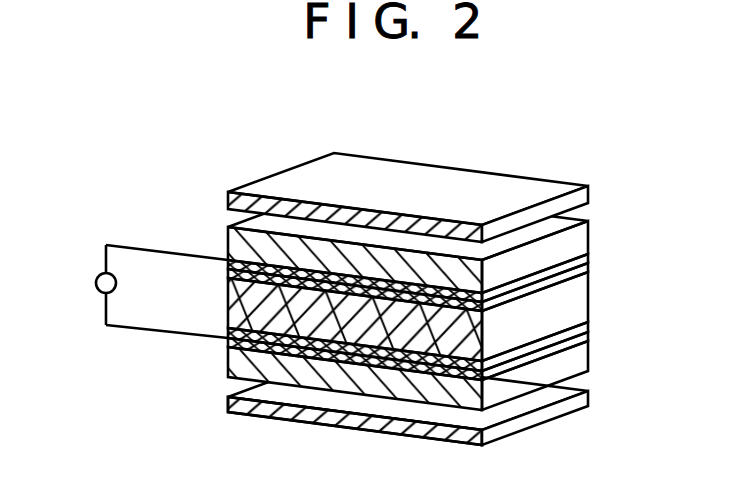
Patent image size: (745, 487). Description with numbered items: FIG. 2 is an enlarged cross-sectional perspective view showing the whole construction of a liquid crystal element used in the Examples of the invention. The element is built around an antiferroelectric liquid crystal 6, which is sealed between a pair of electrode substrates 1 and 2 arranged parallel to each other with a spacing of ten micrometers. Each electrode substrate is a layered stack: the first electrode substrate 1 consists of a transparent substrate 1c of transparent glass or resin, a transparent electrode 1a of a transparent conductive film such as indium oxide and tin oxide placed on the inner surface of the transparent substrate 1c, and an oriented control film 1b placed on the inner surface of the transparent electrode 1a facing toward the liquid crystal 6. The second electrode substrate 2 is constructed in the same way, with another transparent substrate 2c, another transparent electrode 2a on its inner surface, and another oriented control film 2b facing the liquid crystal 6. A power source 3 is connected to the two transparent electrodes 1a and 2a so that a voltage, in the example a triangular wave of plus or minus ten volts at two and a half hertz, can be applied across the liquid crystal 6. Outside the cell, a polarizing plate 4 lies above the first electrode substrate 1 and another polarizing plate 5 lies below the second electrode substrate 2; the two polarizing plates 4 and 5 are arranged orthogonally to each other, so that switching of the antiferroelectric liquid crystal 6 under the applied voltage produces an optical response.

The electrode substrate 1 is at (465, 260).
The transparent electrode 1a is at (592, 257).
The oriented control film 1b is at (592, 265).
The transparent substrate 1c is at (582, 238).
The another electrode substrate 2 is at (479, 357).
The another transparent electrode 2a is at (592, 337).
The another oriented control film 2b is at (592, 328).
The another transparent substrate 2c is at (585, 357).
The power source 3 is at (95, 283).
The polarizing plate 4 is at (590, 194).
The another polarizing plate 5 is at (590, 397).
The antiferroelectric liquid crystal 6 is at (228, 300).